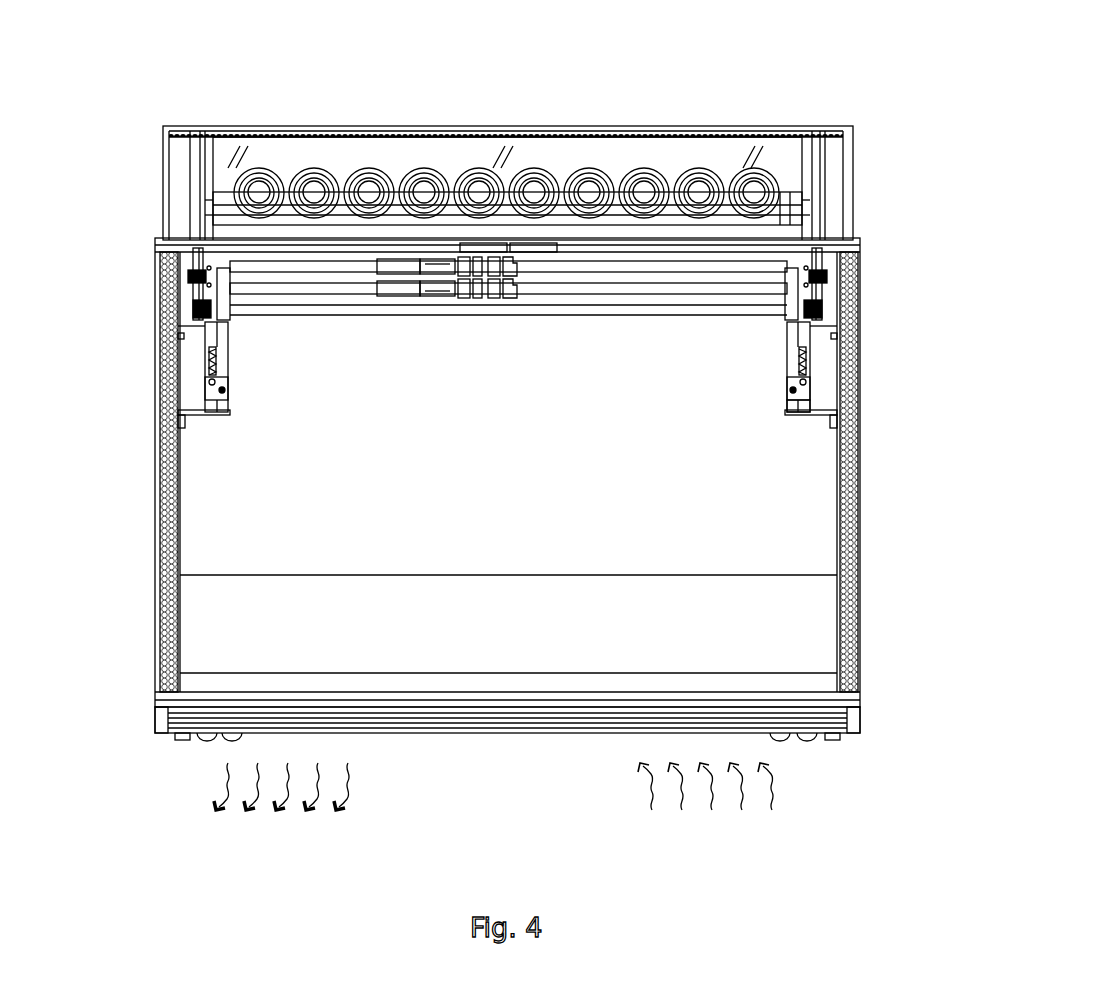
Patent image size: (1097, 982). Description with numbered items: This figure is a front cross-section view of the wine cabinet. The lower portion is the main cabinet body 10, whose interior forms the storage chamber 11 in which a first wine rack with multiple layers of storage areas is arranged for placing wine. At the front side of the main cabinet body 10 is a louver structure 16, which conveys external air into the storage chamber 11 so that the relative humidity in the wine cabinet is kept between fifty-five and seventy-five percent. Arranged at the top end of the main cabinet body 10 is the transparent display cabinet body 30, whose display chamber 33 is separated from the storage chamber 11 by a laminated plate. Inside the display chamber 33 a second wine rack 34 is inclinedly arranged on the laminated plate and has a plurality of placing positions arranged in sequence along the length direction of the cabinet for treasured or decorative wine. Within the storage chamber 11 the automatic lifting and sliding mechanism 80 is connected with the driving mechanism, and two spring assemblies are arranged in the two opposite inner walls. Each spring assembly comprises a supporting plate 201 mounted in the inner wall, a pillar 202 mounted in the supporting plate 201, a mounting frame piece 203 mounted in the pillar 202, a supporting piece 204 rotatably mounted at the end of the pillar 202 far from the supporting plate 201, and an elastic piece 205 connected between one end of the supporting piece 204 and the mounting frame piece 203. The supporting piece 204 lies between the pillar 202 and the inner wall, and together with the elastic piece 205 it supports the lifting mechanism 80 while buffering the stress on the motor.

The main cabinet body 10 is at (860, 597).
The storage chamber 11 is at (203, 562).
The louver structure 16 is at (235, 713).
The transparent display cabinet body 30 is at (855, 177).
The display chamber 33 is at (583, 150).
The second wine rack 34 is at (780, 195).
The automatic lifting and sliding mechanism 80 is at (340, 314).
The supporting plate 201 is at (788, 414).
The pillar 202 is at (795, 403).
The mounting frame piece 203 is at (808, 390).
The supporting piece 204 is at (808, 333).
The elastic piece 205 is at (805, 365).